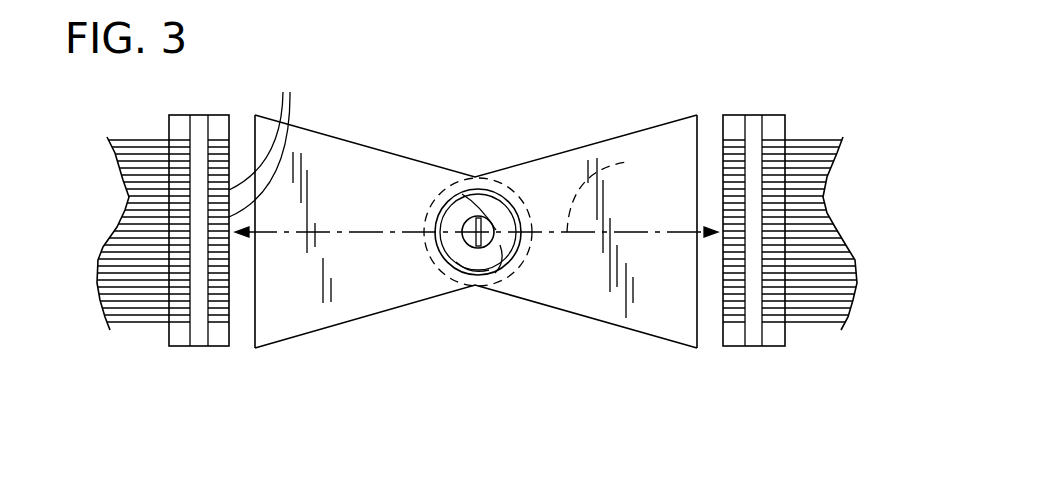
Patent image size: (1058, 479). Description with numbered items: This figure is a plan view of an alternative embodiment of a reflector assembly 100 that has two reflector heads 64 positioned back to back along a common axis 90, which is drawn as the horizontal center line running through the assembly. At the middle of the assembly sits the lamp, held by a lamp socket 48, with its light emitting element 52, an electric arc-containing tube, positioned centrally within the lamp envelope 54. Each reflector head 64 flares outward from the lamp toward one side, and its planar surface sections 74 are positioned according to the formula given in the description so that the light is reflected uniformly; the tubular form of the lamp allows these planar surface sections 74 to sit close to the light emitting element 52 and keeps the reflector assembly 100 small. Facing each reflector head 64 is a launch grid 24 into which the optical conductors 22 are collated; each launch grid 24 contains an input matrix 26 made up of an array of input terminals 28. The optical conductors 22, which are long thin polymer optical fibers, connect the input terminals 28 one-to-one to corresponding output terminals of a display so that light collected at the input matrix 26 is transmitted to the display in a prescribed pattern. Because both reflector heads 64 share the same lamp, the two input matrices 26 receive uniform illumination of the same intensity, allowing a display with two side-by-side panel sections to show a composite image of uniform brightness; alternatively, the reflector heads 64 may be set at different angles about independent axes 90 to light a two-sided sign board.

The optical conductors 22 is at (138, 327).
The launch grid 24 is at (190, 347).
The input matrix 26 is at (229, 325).
The input terminals 28 is at (266, 140).
The lamp socket 48 is at (475, 177).
The light emitting element 52 is at (462, 236).
The lamp envelope 54 is at (497, 250).
The reflector heads 64 is at (380, 148).
The planar surface sections 74 is at (398, 153).
The common axis 90 is at (615, 190).
The reflector assembly 100 is at (520, 88).